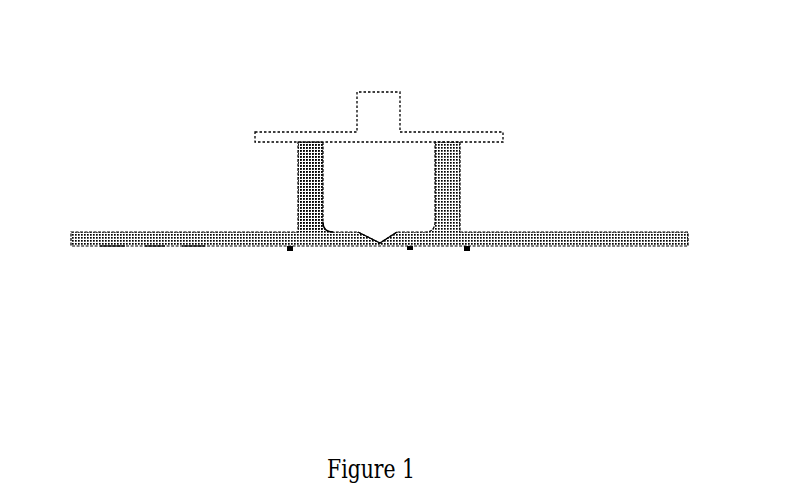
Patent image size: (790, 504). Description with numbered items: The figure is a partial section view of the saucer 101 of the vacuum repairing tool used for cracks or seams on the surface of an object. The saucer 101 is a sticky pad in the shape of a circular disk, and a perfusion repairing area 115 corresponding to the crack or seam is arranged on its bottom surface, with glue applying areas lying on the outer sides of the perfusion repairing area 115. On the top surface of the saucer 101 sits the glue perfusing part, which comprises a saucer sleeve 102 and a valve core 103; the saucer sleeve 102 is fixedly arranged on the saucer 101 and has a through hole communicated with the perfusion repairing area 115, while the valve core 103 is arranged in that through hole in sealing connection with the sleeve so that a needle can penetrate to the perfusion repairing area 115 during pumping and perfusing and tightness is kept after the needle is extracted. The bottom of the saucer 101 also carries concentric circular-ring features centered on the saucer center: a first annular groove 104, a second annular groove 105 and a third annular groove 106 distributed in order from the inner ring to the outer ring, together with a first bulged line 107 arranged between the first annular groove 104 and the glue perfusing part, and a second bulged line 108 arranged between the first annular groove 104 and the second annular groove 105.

The saucer 101 is at (573, 232).
The saucer sleeve 102 is at (297, 183).
The valve core 103 is at (400, 165).
The first annular groove 104 is at (242, 242).
The second annular groove 105 is at (155, 240).
The third annular groove 106 is at (112, 245).
The first bulged line 107 is at (462, 247).
The second bulged line 108 is at (193, 245).
The perfusion repairing area 115 is at (405, 245).